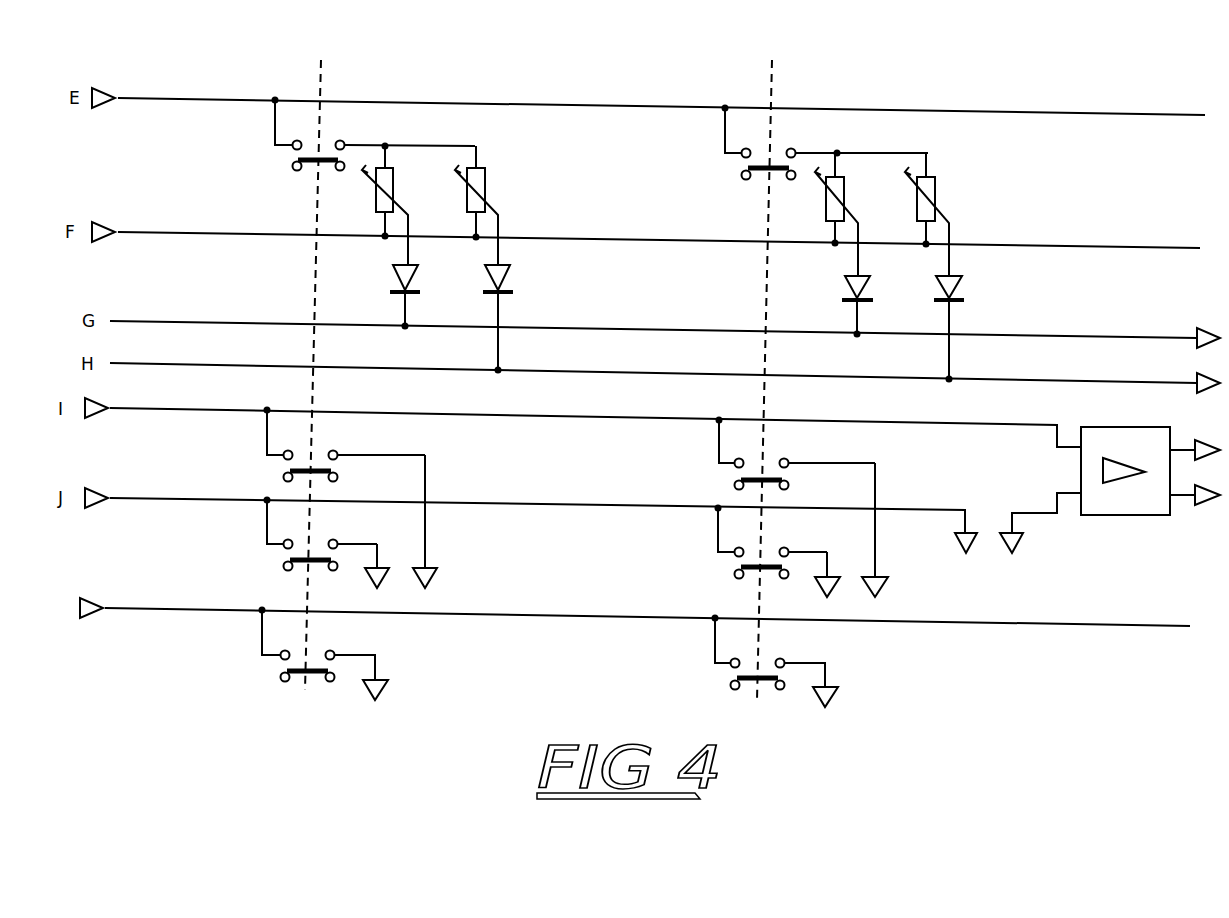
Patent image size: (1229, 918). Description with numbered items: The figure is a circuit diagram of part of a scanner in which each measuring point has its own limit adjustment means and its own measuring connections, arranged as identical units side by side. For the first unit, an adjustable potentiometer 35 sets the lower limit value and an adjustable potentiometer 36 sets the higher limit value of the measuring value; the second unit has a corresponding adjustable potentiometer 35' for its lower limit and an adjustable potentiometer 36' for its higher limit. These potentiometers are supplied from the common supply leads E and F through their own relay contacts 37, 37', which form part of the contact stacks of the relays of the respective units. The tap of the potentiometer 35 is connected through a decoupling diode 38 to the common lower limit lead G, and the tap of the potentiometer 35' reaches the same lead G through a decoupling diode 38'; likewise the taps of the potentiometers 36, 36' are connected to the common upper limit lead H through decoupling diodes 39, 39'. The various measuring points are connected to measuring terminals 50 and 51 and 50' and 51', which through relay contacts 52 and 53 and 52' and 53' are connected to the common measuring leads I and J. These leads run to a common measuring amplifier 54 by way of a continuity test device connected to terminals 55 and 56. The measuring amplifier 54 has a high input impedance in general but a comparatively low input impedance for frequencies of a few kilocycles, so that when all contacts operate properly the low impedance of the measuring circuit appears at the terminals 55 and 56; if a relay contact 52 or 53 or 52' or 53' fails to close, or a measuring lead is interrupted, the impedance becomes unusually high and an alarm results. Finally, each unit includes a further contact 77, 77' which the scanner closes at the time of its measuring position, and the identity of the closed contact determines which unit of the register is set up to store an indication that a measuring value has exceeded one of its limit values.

The adjustable potentiometer 35 is at (375, 205).
The adjustable potentiometer 36 is at (465, 205).
The relay contact 37 is at (366, 137).
The decoupling diode 38 is at (390, 297).
The decoupling diode 39 is at (483, 319).
The adjustable potentiometer 35' is at (822, 214).
The adjustable potentiometer 36' is at (914, 214).
The relay contact 37' is at (817, 143).
The decoupling diode 38' is at (840, 306).
The decoupling diode 39' is at (932, 329).
The measuring terminal 50 is at (373, 577).
The measuring terminal 51 is at (422, 533).
The relay contact 52 is at (337, 445).
The relay contact 53 is at (310, 538).
The relay contact 77 is at (313, 654).
The measuring terminal 50' is at (826, 586).
The measuring terminal 51' is at (874, 542).
The relay contact 52' is at (785, 454).
The relay contact 53' is at (760, 544).
The relay contact 77' is at (765, 662).
The measuring amplifier 54 is at (1150, 483).
The terminal 55 is at (963, 557).
The terminal 56 is at (1040, 537).